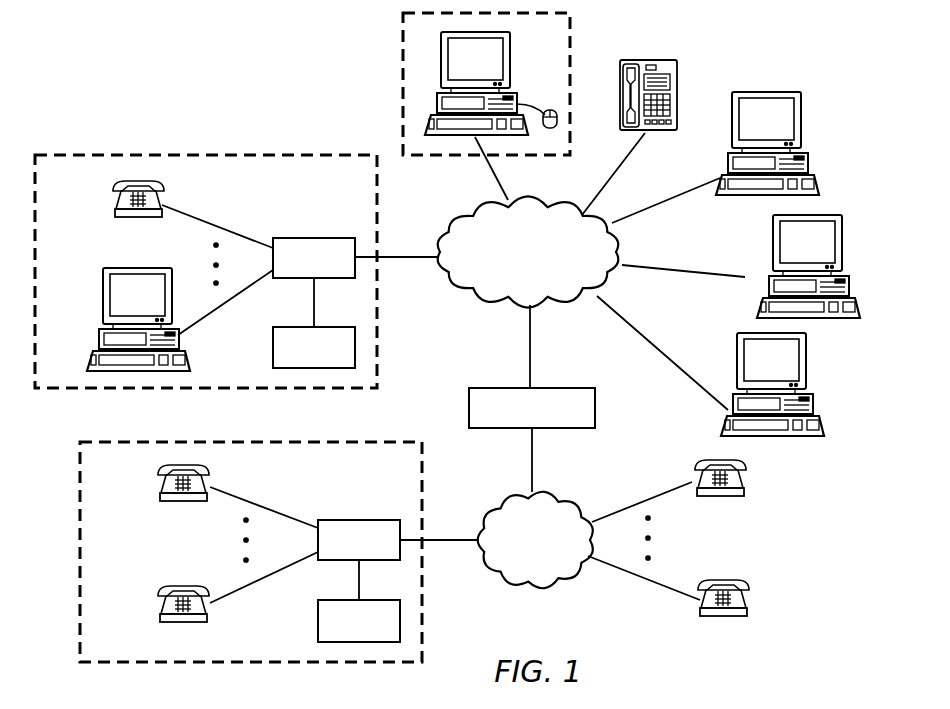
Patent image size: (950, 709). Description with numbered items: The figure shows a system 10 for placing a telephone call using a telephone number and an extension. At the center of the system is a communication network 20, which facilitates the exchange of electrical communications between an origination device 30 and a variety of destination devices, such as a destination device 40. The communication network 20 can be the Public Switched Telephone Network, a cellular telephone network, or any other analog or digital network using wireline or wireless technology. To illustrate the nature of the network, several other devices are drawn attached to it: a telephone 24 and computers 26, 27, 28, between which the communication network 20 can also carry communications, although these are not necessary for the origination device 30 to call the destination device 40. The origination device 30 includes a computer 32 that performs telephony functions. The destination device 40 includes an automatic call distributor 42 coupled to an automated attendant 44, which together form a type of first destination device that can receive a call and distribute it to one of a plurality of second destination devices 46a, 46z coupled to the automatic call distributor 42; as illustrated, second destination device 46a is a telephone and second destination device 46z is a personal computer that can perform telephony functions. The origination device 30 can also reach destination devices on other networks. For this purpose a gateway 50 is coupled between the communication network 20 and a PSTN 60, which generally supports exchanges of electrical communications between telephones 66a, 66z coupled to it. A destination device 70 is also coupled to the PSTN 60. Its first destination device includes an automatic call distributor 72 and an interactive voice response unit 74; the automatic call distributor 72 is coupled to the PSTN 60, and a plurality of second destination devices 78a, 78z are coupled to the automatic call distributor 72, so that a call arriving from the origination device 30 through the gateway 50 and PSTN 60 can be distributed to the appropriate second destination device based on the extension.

The system 10 is at (140, 46).
The communication network 20 is at (461, 298).
The telephone 24 is at (647, 60).
The computer 26 is at (767, 143).
The computer 27 is at (808, 266).
The computer 28 is at (772, 384).
The origination device 30 is at (403, 70).
The computer 32 is at (491, 83).
The destination device 40 is at (210, 155).
The automatic call distributor 42 is at (312, 238).
The automated attendant 44 is at (293, 327).
The second destination device 46a is at (110, 202).
The second destination device 46z is at (138, 319).
The gateway 50 is at (595, 406).
The PSTN 60 is at (520, 588).
The telephone 66a is at (720, 497).
The telephone 66z is at (723, 617).
The destination device 70 is at (80, 562).
The automatic call distributor 72 is at (358, 520).
The interactive voice response unit 74 is at (318, 622).
The second destination device 78a is at (155, 486).
The second destination device 78z is at (156, 606).